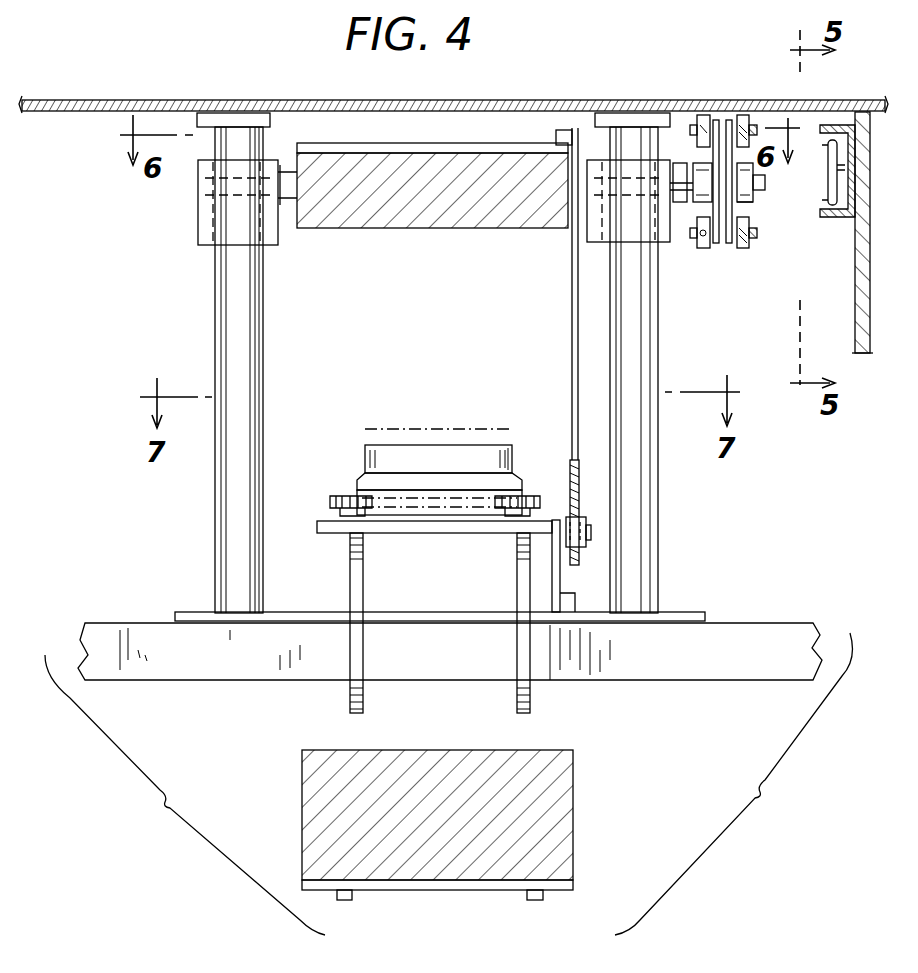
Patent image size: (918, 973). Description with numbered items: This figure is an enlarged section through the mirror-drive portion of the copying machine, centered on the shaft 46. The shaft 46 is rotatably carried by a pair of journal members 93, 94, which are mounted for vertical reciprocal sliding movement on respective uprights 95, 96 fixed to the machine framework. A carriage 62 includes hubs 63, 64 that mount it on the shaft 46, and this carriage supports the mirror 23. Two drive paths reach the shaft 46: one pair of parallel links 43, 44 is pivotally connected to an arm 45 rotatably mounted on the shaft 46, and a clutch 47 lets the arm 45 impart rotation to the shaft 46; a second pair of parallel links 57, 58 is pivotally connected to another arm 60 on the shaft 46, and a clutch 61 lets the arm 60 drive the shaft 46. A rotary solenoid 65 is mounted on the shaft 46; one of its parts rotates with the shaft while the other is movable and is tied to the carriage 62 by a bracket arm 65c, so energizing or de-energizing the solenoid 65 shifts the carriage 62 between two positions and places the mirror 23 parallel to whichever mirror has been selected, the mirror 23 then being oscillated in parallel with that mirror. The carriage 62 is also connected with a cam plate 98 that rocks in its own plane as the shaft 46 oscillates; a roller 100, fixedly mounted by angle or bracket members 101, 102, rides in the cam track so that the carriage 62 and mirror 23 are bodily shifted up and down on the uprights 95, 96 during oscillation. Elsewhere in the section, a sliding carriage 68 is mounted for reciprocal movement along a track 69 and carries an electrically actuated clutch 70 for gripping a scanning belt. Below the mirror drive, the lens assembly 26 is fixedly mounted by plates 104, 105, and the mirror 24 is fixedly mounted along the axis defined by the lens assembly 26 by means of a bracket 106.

The mirror 23 is at (445, 210).
The mirror 24 is at (437, 820).
The lens assembly 26 is at (365, 456).
The parallel link 43 is at (703, 115).
The parallel link 44 is at (702, 248).
The arm 45 is at (716, 120).
The shaft 46 is at (765, 180).
The clutch 47 is at (698, 163).
The parallel link 57 is at (742, 115).
The parallel link 58 is at (742, 248).
The arm 60 is at (729, 120).
The clutch 61 is at (755, 202).
The carriage 62 is at (400, 143).
The hub 63 is at (578, 160).
The hub 64 is at (288, 205).
The rotary solenoid 65 is at (680, 205).
The bracket arm 65c is at (557, 130).
The carriage 68 is at (818, 160).
The track 69 is at (832, 140).
The electrically actuated clutch 70 is at (834, 217).
The journal member 93 is at (200, 224).
The journal member 94 is at (640, 145).
The upright 95 is at (263, 326).
The upright 96 is at (658, 486).
The cam plate 98 is at (572, 325).
The roller 100 is at (586, 545).
The bracket member 101 is at (462, 533).
The bracket member 102 is at (560, 582).
The plate 104 is at (350, 586).
The plate 105 is at (517, 586).
The bracket 106 is at (407, 890).